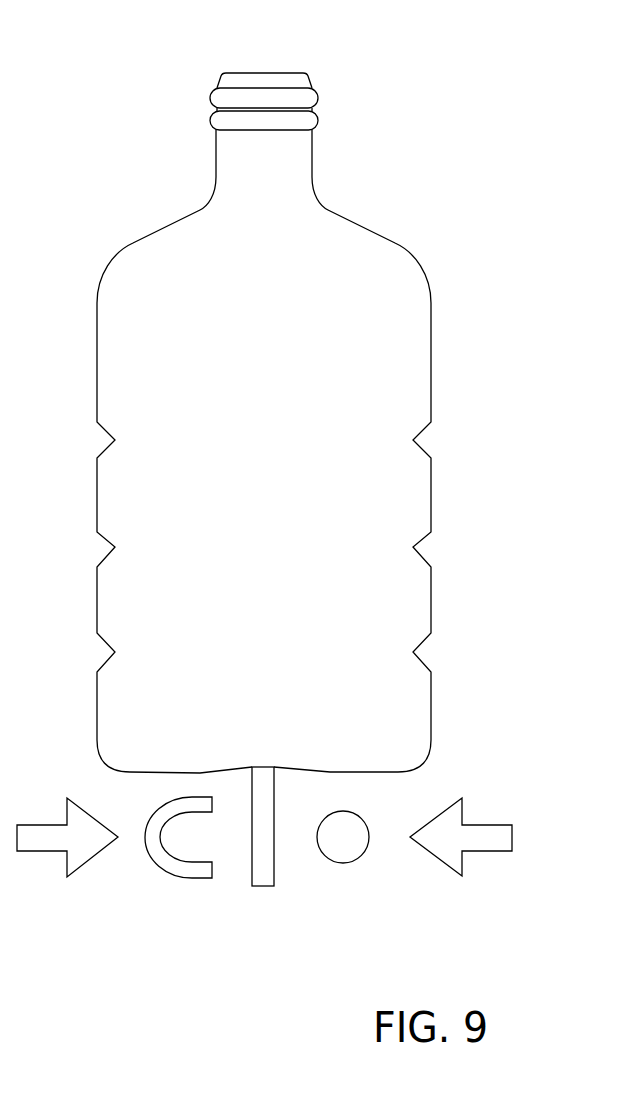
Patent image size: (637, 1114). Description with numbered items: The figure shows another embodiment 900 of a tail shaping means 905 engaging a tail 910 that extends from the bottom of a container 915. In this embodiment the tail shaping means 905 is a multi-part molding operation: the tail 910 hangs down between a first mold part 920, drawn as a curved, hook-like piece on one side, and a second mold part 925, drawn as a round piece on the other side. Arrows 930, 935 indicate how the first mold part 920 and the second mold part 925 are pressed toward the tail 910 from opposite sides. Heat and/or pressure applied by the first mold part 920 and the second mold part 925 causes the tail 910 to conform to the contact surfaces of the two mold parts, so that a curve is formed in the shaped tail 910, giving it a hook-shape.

The embodiment 900 is at (269, 507).
The tail shaping means 905 is at (261, 887).
The tail 910 is at (265, 886).
The container 915 is at (431, 355).
The first mold part 920 is at (180, 878).
The second mold part 925 is at (352, 863).
The arrow 930 is at (42, 851).
The arrow 935 is at (490, 851).